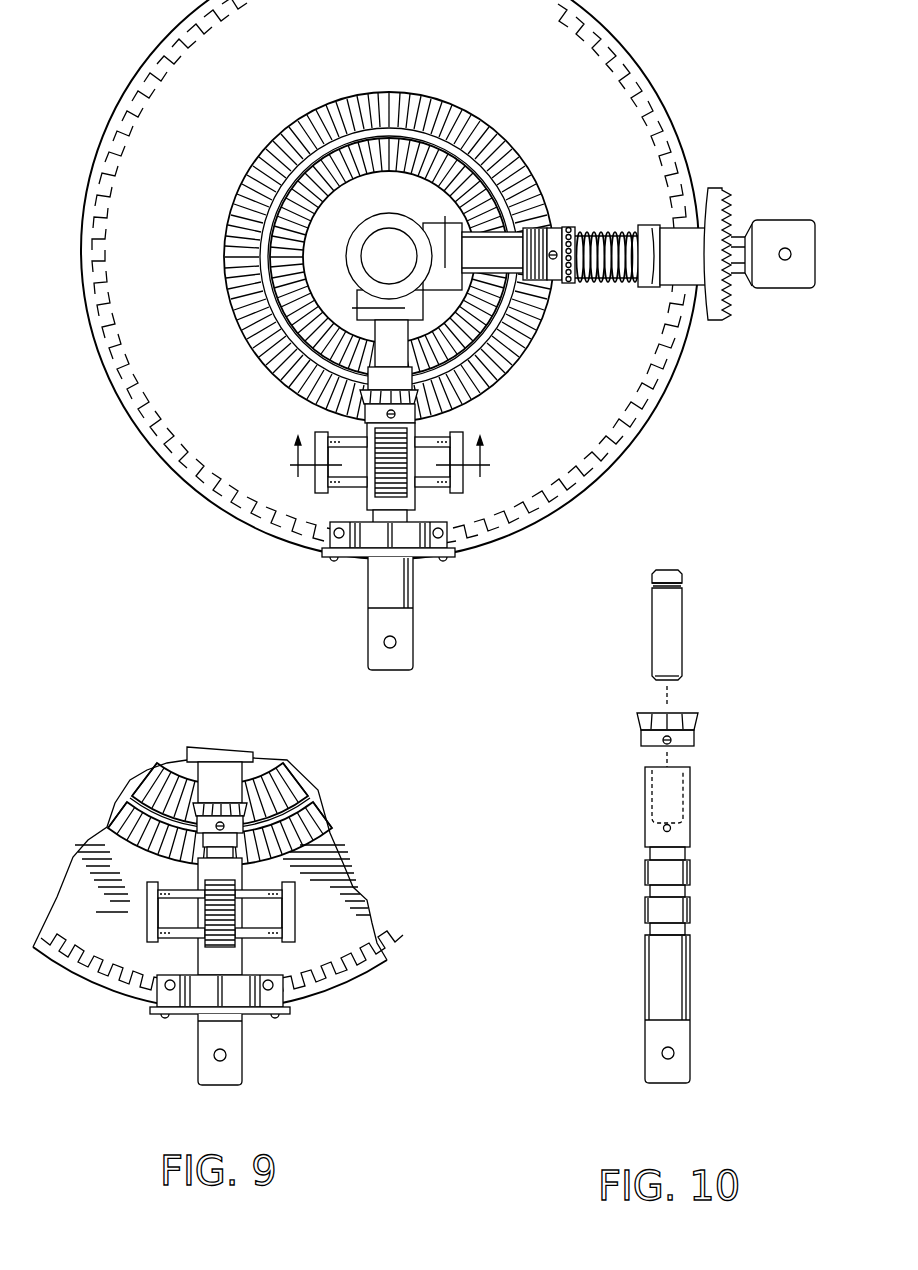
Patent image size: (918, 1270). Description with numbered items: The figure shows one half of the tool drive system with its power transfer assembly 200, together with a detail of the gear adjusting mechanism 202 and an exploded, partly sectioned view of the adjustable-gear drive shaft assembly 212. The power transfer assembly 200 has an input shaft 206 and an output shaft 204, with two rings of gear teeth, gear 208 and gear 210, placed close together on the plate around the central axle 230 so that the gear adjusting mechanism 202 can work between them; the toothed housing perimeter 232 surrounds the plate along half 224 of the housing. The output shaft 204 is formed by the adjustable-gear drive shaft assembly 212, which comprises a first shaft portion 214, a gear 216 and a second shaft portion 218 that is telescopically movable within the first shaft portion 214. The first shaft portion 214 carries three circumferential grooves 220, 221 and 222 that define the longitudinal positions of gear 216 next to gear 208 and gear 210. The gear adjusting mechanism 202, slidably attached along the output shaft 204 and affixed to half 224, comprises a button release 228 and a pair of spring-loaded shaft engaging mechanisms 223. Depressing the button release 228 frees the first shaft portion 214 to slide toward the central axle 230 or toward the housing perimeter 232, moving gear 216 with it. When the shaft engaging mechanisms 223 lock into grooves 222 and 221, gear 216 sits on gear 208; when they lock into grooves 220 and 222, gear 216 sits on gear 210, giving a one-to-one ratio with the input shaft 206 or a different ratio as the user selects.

In FIG. 8, the power transfer assembly 200 is at (140, 533).
In FIG. 8, the gear adjusting mechanism 202 is at (470, 425).
In FIG. 9, the gear adjusting mechanism 202 is at (300, 905).
In FIG. 8, the output shaft 204 is at (413, 590).
In FIG. 8, the input shaft 206 is at (738, 278).
In FIG. 8, the gear 208 is at (525, 160).
In FIG. 9, the gear 208 is at (288, 770).
In FIG. 8, the gear 210 is at (507, 137).
In FIG. 9, the gear 210 is at (325, 800).
In FIG. 10, the adjustable-gear drive shaft assembly 212 is at (615, 1050).
In FIG. 9, the first shaft portion 214 is at (160, 990).
In FIG. 10, the first shaft portion 214 is at (690, 982).
In FIG. 8, the gear 216 is at (360, 400).
In FIG. 9, the gear 216 is at (200, 815).
In FIG. 10, the gear 216 is at (698, 715).
In FIG. 10, the second shaft portion 218 is at (690, 637).
In FIG. 9, the groove 220 is at (200, 852).
In FIG. 10, the groove 220 is at (690, 855).
In FIG. 10, the groove 221 is at (690, 930).
In FIG. 10, the groove 222 is at (690, 893).
In FIG. 8, the shaft engaging mechanism 223 is at (330, 437).
In FIG. 9, the shaft engaging mechanism 223 is at (160, 930).
In FIG. 8, the half 224 is at (612, 28).
In FIG. 8, the button release 228 is at (362, 497).
In FIG. 9, the button release 228 is at (232, 947).
In FIG. 8, the central axle 230 is at (352, 268).
In FIG. 8, the housing perimeter 232 is at (633, 430).
In FIG. 9, the housing perimeter 232 is at (325, 990).